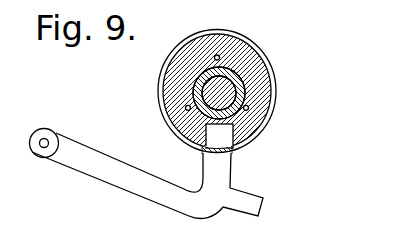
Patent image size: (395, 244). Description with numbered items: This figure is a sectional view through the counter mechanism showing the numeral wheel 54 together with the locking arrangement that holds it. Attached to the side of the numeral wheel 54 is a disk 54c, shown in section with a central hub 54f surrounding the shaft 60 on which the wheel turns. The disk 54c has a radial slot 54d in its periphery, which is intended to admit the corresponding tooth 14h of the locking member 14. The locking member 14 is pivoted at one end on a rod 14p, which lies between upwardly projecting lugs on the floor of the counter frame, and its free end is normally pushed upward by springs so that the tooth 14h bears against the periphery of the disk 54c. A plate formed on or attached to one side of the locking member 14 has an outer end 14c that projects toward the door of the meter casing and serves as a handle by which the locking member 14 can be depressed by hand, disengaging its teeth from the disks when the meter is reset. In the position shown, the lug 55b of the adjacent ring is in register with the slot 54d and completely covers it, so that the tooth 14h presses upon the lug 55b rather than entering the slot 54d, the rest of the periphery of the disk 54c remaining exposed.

The numeral wheel 54 is at (270, 61).
The disk 54c is at (229, 45).
The slot 54d is at (227, 135).
The hub 54f is at (200, 82).
The shaft 60 is at (223, 92).
The lug 55b is at (204, 151).
The locking member 14 is at (131, 194).
The rod 14p is at (43, 146).
The tooth 14h is at (224, 173).
The outer end of plate 14c is at (256, 209).